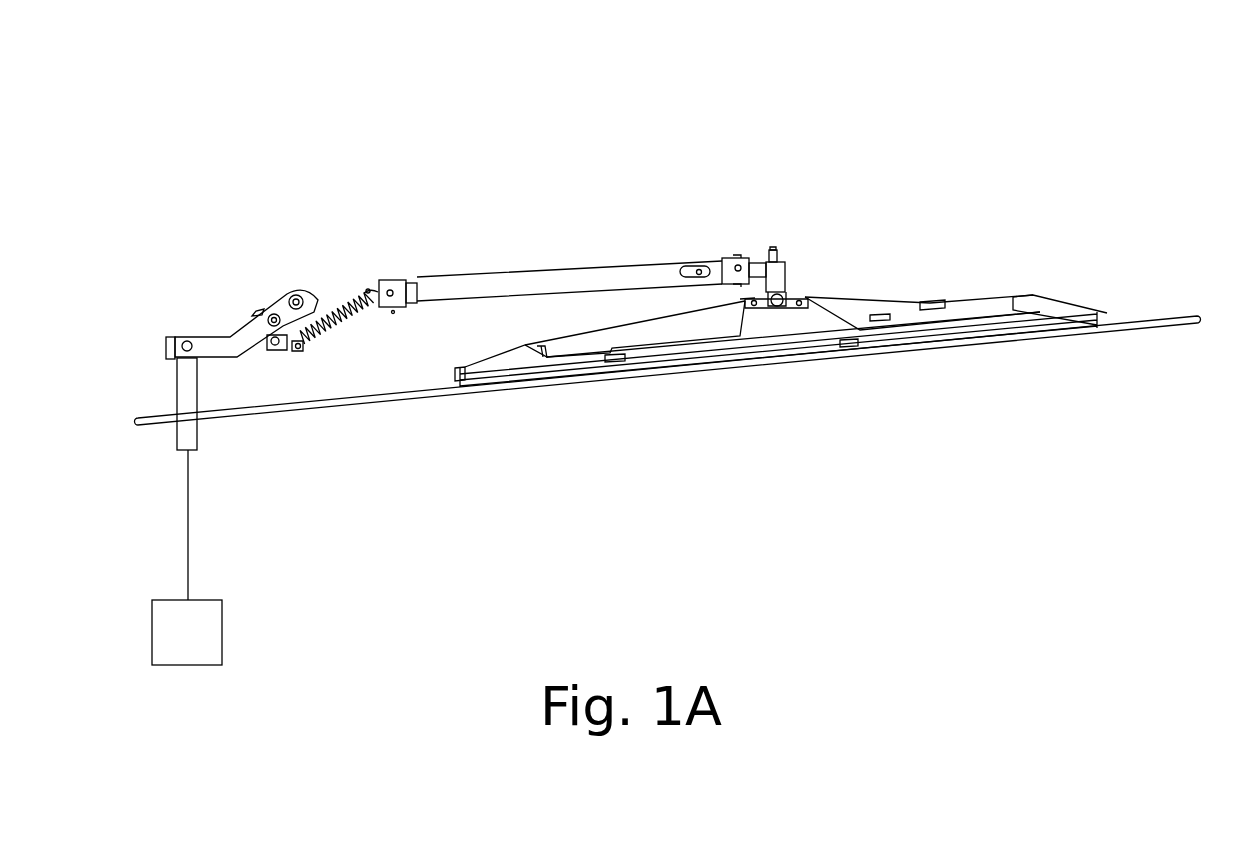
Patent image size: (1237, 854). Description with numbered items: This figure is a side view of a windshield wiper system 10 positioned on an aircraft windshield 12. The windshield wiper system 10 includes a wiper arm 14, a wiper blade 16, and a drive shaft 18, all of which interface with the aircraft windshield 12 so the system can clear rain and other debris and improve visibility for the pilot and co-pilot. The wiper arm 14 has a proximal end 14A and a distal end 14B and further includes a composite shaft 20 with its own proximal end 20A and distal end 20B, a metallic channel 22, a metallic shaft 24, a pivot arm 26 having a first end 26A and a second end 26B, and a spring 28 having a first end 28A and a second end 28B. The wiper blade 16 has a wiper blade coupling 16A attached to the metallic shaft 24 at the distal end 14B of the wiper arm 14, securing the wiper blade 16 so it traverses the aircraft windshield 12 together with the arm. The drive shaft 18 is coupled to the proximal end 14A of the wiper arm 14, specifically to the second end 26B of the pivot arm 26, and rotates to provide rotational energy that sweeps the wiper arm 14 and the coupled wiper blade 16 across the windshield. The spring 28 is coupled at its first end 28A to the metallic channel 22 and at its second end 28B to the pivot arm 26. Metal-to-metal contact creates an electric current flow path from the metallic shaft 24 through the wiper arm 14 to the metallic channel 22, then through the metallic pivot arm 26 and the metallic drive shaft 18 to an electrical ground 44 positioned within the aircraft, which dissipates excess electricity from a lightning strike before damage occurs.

The windshield wiper system 10 is at (348, 122).
The aircraft windshield 12 is at (1130, 330).
The wiper arm 14 is at (498, 228).
The proximal end 14A is at (197, 233).
The distal end 14B is at (766, 210).
The wiper blade 16 is at (965, 252).
The wiper blade coupling 16A is at (786, 290).
The drive shaft 18 is at (185, 437).
The composite shaft 20 is at (590, 265).
The proximal end 20A is at (425, 280).
The distal end 20B is at (732, 265).
The metallic channel 22 is at (393, 314).
The metallic shaft 24 is at (762, 268).
The pivot arm 26 is at (192, 281).
The first end 26A is at (297, 293).
The second end 26B is at (175, 340).
The spring 28 is at (346, 396).
The first end 28A is at (375, 296).
The second end 28B is at (305, 345).
The electrical ground 44 is at (222, 640).